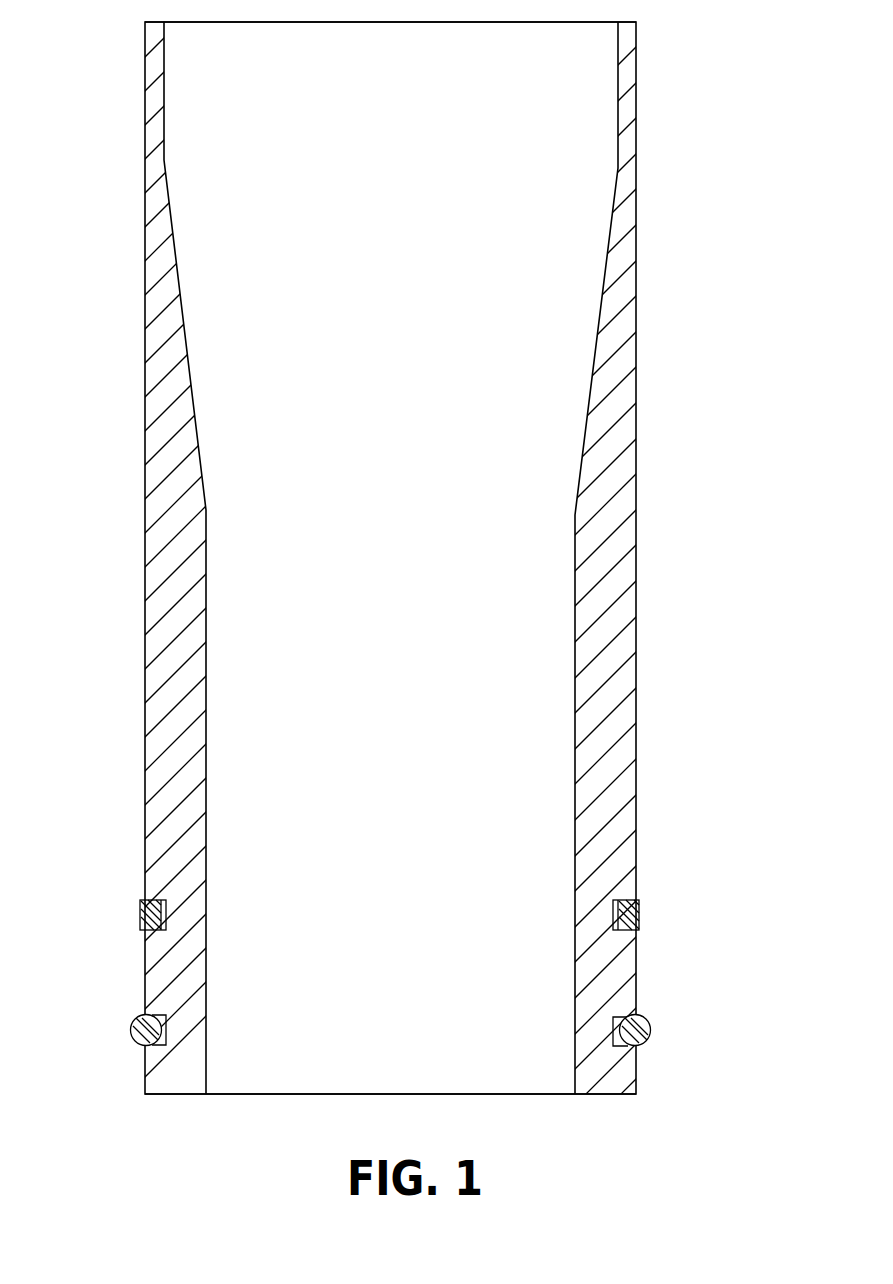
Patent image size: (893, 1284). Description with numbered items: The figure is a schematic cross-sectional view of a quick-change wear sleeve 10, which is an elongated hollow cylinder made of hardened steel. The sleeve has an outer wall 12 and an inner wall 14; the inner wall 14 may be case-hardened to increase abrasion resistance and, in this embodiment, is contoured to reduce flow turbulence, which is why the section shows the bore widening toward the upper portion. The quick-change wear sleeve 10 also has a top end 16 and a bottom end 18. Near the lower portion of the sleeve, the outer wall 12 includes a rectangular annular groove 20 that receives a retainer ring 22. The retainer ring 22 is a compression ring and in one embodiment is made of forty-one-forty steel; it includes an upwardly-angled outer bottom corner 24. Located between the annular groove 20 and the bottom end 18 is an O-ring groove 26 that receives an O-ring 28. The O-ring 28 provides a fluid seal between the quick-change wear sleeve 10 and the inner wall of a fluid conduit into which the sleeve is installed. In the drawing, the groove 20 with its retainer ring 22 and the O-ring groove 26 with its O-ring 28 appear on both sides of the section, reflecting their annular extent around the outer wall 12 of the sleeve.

The quick-change wear sleeve 10 is at (446, 575).
The outer wall 12 is at (637, 305).
The inner wall 14 is at (588, 419).
The top end 16 is at (632, 20).
The bottom end 18 is at (607, 1095).
The rectangular annular groove 20 is at (675, 869).
The retainer ring 22 is at (643, 918).
The upwardly-angled outer bottom corner 24 is at (143, 930).
The O-ring groove 26 is at (147, 1013).
The O-ring 28 is at (645, 1028).